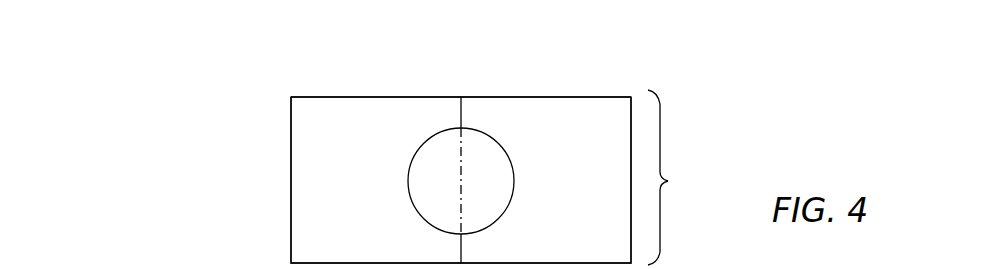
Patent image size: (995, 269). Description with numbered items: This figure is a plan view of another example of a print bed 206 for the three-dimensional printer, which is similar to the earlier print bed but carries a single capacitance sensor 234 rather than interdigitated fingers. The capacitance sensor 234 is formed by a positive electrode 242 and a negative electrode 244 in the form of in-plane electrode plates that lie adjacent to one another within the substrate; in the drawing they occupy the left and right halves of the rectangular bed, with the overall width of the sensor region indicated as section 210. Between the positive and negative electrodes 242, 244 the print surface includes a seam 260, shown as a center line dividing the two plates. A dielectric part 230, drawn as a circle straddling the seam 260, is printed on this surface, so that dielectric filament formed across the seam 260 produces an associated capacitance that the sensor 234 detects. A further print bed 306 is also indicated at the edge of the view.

The print bed 206 is at (250, 72).
The section 210 is at (681, 177).
The dielectric part 230 is at (436, 135).
The capacitance sensor 234 is at (291, 97).
The positive electrode 242 is at (360, 174).
The negative electrode 244 is at (593, 174).
The seam 260 is at (461, 143).
The layer 306 is at (127, 268).